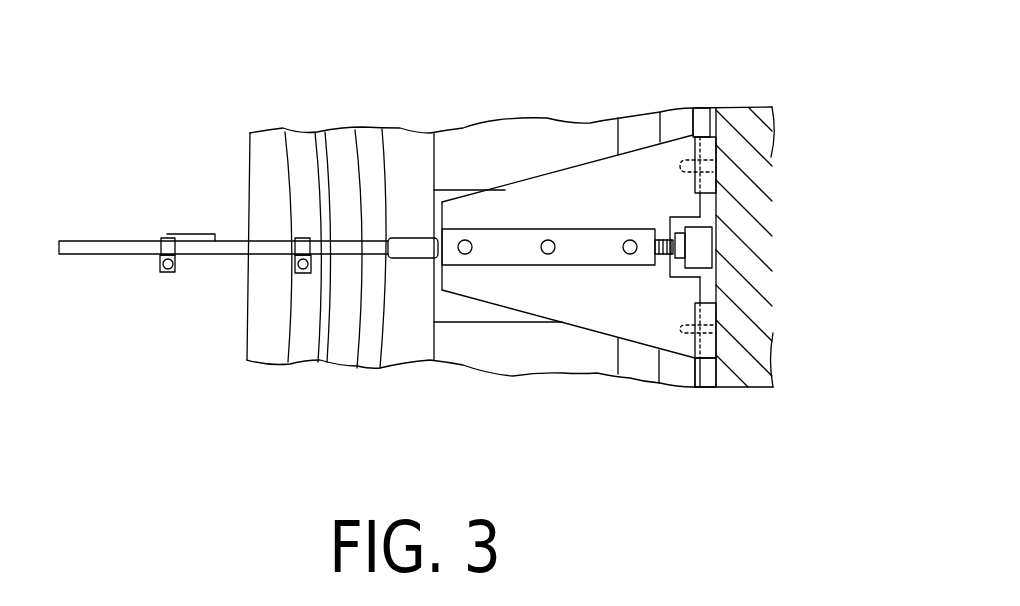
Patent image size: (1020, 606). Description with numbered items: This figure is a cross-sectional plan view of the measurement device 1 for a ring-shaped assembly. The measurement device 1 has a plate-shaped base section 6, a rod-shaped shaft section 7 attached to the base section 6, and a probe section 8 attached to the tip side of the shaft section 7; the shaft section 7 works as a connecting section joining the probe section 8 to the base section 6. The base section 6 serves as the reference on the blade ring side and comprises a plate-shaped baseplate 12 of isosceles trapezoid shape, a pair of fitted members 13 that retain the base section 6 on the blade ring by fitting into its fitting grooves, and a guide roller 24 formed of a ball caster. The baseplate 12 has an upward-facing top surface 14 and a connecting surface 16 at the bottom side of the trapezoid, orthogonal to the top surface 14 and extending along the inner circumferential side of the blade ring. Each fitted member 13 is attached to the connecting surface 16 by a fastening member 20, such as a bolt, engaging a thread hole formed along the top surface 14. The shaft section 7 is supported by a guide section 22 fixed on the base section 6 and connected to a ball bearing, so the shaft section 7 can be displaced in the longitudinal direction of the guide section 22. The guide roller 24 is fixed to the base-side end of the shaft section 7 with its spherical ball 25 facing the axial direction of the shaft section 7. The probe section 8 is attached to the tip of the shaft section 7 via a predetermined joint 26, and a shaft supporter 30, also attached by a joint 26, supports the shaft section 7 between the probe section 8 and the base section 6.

The measurement device 1 is at (141, 80).
The base section 6 is at (507, 314).
The shaft section 7 is at (233, 245).
The probe section 8 is at (170, 285).
The baseplate 12 is at (602, 317).
The fitted member 13 is at (710, 182).
The top surface 14 is at (590, 188).
The connecting surface 16 is at (713, 288).
The fastening member 20 is at (717, 327).
The guide section 22 is at (512, 247).
The guide roller 24 is at (703, 237).
The ball 25 is at (712, 248).
The joint 26 is at (165, 240).
The shaft supporter 30 is at (303, 277).